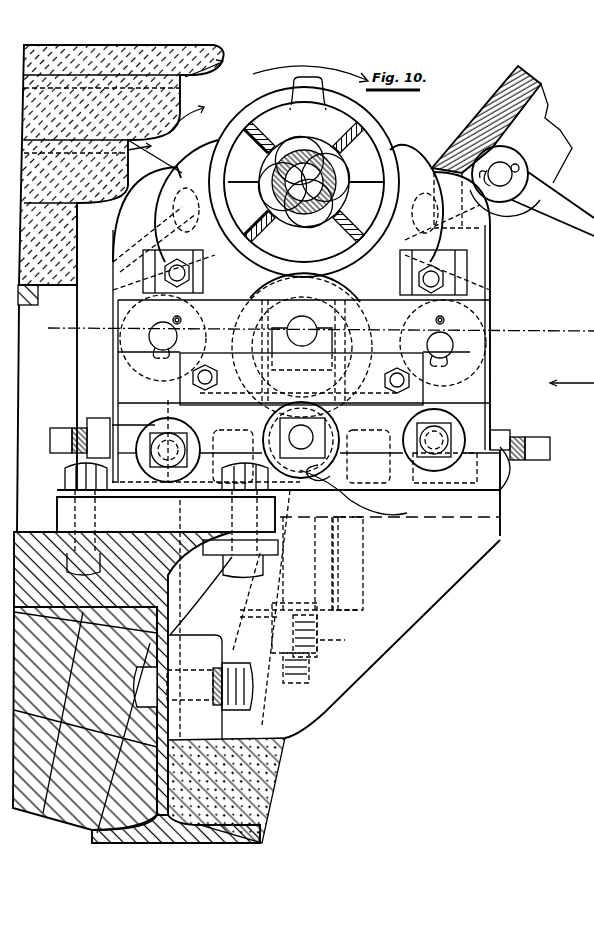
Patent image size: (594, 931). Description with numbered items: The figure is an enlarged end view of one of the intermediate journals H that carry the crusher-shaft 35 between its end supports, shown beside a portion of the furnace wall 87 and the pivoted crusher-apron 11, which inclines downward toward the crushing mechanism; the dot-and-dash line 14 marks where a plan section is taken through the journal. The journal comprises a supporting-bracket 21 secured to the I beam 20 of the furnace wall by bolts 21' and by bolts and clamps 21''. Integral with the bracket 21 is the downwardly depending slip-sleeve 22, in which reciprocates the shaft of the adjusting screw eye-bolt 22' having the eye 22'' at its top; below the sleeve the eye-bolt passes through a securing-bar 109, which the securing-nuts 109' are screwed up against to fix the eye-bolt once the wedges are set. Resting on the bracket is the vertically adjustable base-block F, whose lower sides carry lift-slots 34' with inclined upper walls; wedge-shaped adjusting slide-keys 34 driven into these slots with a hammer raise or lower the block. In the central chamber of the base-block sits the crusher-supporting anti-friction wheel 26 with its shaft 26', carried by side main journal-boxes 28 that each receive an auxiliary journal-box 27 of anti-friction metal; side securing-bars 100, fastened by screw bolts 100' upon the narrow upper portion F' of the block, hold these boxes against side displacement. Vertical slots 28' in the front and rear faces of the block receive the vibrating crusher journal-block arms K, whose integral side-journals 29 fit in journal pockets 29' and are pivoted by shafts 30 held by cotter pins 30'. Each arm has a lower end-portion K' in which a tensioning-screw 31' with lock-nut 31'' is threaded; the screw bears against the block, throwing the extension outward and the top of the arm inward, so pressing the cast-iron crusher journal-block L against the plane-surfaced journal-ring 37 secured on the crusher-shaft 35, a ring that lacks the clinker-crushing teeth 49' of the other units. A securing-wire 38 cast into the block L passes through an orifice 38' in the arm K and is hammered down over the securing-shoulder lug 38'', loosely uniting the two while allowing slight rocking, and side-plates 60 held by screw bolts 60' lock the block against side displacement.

The crusher-apron 11 is at (480, 112).
The line of section 14 is at (48, 329).
The I beam 20 is at (172, 585).
The supporting-bracket 21 is at (256, 666).
The bolts 21' is at (222, 691).
The bolts and clamps 21'' is at (167, 520).
The slip-sleeve 22 is at (317, 567).
The adjusting screw eye-bolt 22' is at (311, 643).
The eye 22'' is at (368, 492).
The anti-friction wheel 26 is at (302, 345).
The shaft 26' is at (313, 327).
The auxiliary journal-box 27 is at (325, 336).
The main journal-boxes 28 is at (294, 345).
The vertical slots 28' is at (307, 431).
The side-journals 29 is at (303, 340).
The journal pockets 29' is at (294, 318).
The shafts 30 is at (312, 344).
The cotter pins 30' is at (352, 332).
The tensioning-screw 31' is at (304, 455).
The lock-nut 31'' is at (300, 431).
The adjusting slide-keys 34 is at (521, 491).
The lift-slot 34' is at (338, 456).
The crusher-shaft 35 is at (304, 182).
The journal-ring 37 is at (246, 128).
The securing-wire 38 is at (322, 244).
The orifice 38' is at (315, 247).
The securing-shoulder lug 38'' is at (304, 301).
The clinker-crushing teeth 49' is at (293, 93).
The side-plates 60 is at (305, 271).
The screw bolts 60' is at (312, 311).
The wall 87 is at (176, 90).
The side securing-bars 100 is at (372, 380).
The screw bolts 100' is at (296, 386).
The securing-bar 109 is at (342, 635).
The securing-nuts 109' is at (350, 643).
The base-block F is at (300, 441).
The central narrow upper portion F' is at (441, 397).
The intermediate-journal H is at (500, 528).
The crusher journal block arms K is at (294, 318).
The lower end-portion K' is at (280, 305).
The crusher journal-blocks L is at (200, 150).